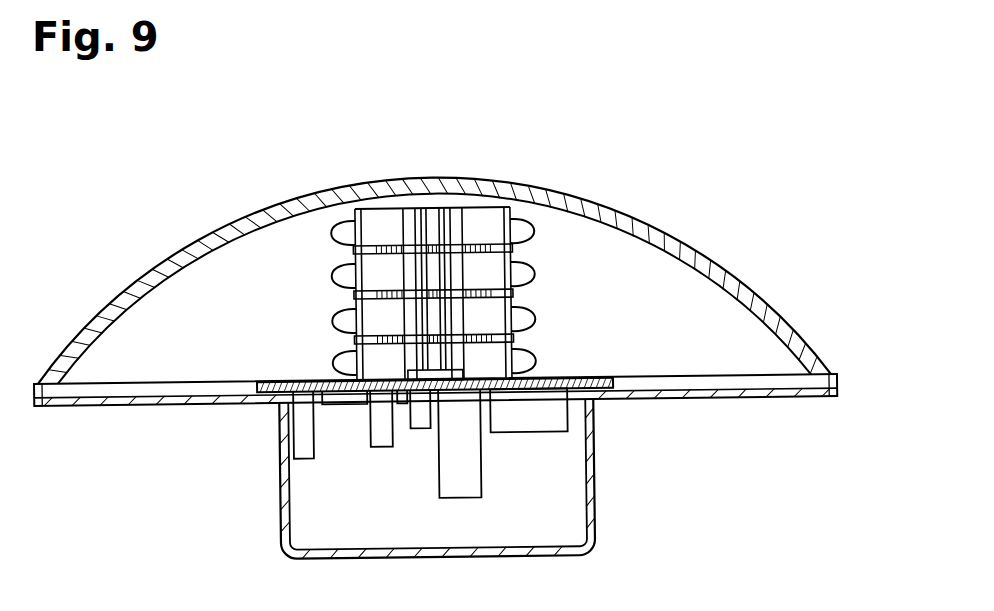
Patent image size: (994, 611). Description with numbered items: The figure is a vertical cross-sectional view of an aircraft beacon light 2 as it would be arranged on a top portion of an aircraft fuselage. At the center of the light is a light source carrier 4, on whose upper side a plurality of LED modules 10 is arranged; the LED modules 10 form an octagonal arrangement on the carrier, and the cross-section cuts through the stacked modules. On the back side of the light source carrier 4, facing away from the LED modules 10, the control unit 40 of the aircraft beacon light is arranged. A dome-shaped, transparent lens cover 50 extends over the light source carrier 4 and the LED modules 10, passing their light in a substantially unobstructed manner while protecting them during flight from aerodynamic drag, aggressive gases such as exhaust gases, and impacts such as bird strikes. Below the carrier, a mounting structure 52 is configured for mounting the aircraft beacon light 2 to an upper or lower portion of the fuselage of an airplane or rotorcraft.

The aircraft beacon light 2 is at (743, 230).
The light source carrier 4 is at (163, 388).
The LED modules 10 is at (336, 259).
The control unit 40 is at (543, 423).
The lens cover 50 is at (579, 196).
The mounting structure 52 is at (591, 502).